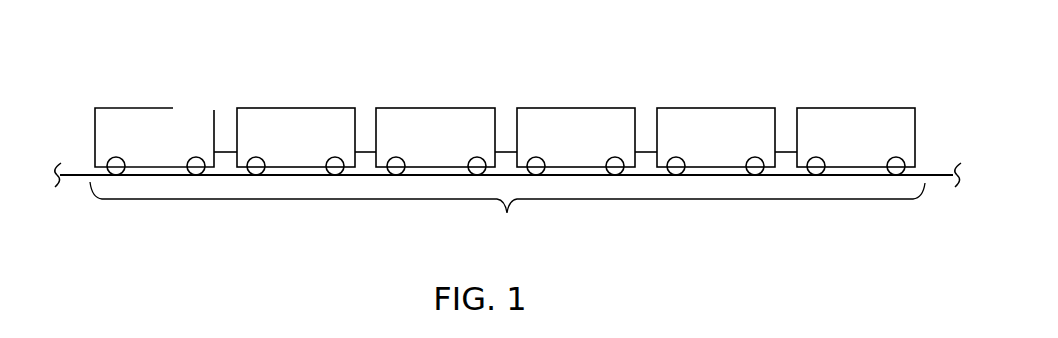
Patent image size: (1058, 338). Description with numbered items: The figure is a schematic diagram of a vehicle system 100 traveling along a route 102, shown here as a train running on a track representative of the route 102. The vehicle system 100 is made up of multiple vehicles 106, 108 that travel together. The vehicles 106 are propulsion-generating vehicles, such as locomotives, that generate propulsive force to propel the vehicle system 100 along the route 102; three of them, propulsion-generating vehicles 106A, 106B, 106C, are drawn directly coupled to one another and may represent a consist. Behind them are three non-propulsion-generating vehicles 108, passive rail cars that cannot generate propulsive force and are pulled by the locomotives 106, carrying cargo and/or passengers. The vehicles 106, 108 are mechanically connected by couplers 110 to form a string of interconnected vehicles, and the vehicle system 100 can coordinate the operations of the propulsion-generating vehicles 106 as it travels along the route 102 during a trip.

The vehicle system 100 is at (507, 212).
The route 102 is at (77, 176).
The propulsion-generating vehicles 106 is at (132, 109).
The first propulsion-generating vehicle 106A is at (153, 106).
The second propulsion-generating vehicle 106B is at (295, 107).
The third propulsion-generating vehicle 106C is at (435, 107).
The non-propulsion-generating vehicles 108 is at (573, 108).
The couplers 110 is at (366, 151).